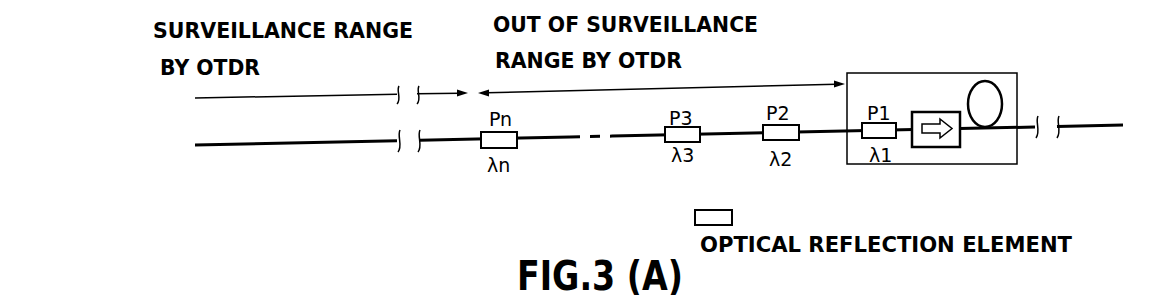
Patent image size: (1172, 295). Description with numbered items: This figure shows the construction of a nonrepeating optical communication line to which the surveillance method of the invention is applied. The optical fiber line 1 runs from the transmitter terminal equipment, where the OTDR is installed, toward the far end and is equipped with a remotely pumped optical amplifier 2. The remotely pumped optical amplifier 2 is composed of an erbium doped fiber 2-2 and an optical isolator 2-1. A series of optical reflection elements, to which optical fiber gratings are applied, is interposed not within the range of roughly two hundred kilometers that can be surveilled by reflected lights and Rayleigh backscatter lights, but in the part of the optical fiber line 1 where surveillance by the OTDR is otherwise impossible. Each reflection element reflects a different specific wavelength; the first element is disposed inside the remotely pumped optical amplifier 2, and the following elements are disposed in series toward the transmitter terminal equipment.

The optical fiber line 1 is at (438, 143).
The remotely pumped optical amplifier 2 is at (891, 168).
The optical isolator 2-1 is at (918, 110).
The erbium doped fiber 2-2 is at (992, 80).